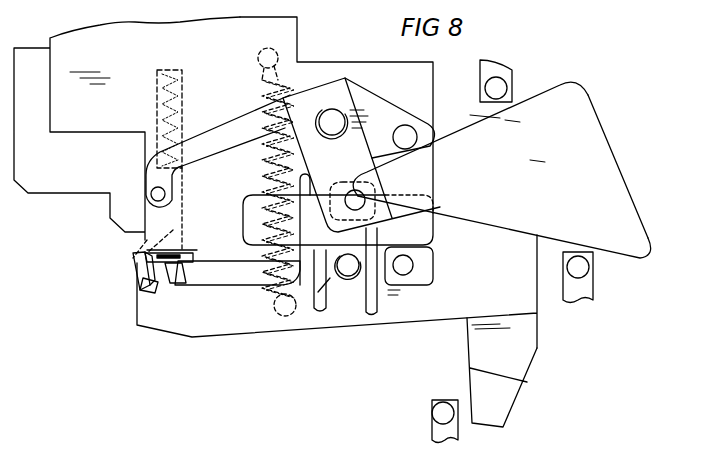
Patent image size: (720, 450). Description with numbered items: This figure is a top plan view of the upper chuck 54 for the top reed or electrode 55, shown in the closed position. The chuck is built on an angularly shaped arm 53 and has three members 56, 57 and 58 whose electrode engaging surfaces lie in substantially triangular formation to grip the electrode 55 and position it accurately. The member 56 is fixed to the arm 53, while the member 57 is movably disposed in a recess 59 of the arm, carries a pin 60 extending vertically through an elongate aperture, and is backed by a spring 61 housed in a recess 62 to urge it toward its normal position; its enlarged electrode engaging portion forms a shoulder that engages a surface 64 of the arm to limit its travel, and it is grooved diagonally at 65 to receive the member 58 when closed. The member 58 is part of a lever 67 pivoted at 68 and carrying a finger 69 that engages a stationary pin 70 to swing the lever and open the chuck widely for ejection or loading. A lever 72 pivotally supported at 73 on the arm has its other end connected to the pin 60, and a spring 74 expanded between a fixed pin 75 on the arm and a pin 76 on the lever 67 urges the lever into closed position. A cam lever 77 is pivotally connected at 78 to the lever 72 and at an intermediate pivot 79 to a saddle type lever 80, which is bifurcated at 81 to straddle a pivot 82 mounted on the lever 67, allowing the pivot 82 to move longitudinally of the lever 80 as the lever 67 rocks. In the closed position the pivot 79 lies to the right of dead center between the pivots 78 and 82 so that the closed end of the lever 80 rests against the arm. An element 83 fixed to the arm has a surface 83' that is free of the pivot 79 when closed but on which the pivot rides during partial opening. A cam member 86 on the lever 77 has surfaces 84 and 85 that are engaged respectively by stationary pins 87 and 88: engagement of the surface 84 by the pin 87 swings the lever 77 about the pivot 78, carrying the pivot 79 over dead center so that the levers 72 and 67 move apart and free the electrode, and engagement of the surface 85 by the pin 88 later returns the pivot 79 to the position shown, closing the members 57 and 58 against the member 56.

The angularly shaped arm 53 is at (116, 122).
The upper chuck 54 is at (48, 255).
The top reed or electrode 55 is at (147, 284).
The fixed member 56 is at (213, 272).
The movable member 57 is at (178, 270).
The member of lever 58 is at (143, 283).
The recess 59 is at (181, 219).
The pin 60 is at (151, 192).
The spring 61 is at (163, 82).
The recess 62 is at (178, 73).
The surface of the arm 64 is at (179, 258).
The diagonal groove 65 is at (133, 258).
The lever 67 is at (219, 324).
The pivot 68 is at (414, 265).
The finger 69 is at (478, 380).
The pin 70 is at (438, 413).
The lever 72 is at (218, 126).
The pivot 73 is at (414, 134).
The spring 74 is at (258, 86).
The fixed pin 75 is at (290, 42).
The pin 76 is at (274, 308).
The cam lever 77 is at (344, 160).
The pivot 78 is at (334, 110).
The pivot 79 is at (359, 201).
The saddle type lever 80 is at (315, 282).
The bifurcation 81 is at (360, 300).
The pivot 82 is at (354, 262).
The element 83 is at (324, 220).
The surface 83' is at (320, 224).
The cam surface 84 is at (558, 84).
The cam surface 85 is at (619, 252).
The cam member 86 is at (600, 150).
The stationary pin 87 is at (504, 90).
The stationary pin 88 is at (568, 266).